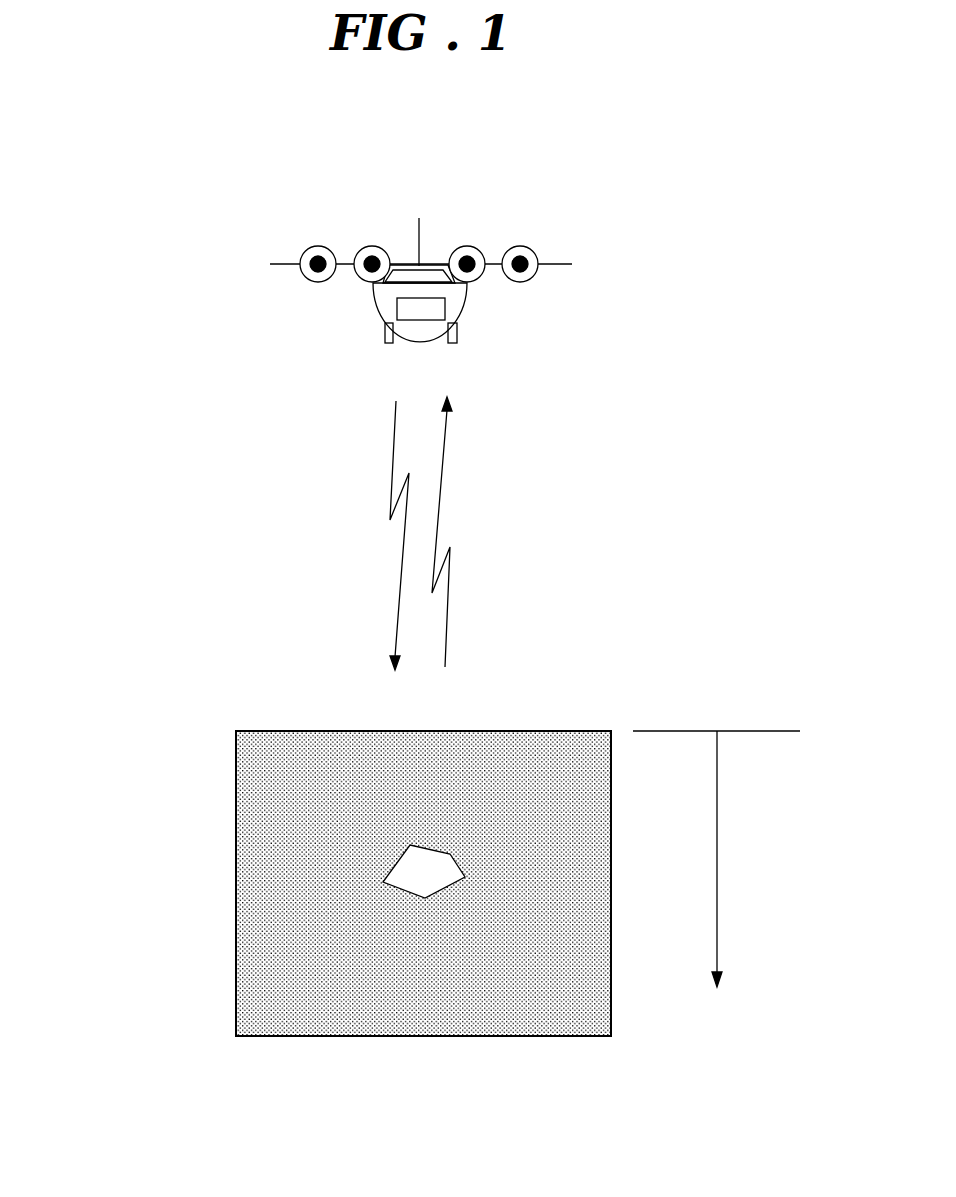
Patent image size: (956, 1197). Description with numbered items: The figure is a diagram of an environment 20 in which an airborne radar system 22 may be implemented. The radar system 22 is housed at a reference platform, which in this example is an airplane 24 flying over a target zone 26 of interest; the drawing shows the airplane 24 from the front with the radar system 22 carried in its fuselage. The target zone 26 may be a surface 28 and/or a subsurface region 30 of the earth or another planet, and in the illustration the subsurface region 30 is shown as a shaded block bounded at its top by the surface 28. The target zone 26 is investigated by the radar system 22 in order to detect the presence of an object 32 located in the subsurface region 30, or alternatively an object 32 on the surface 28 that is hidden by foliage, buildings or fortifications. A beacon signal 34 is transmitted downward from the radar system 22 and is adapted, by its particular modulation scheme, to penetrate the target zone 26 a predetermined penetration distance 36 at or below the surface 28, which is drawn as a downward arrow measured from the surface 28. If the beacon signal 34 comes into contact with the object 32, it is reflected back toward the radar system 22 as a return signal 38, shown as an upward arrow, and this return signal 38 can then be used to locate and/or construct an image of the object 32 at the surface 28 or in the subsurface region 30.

The environment 20 is at (120, 1036).
The airborne radar system 22 is at (437, 303).
The airplane 24 is at (282, 263).
The target zone 26 is at (546, 672).
The surface 28 is at (268, 731).
The subsurface region 30 is at (326, 802).
The object 32 is at (407, 862).
The beacon signal 34 is at (395, 417).
The predetermined penetration distance 36 is at (718, 830).
The return signal 38 is at (445, 430).